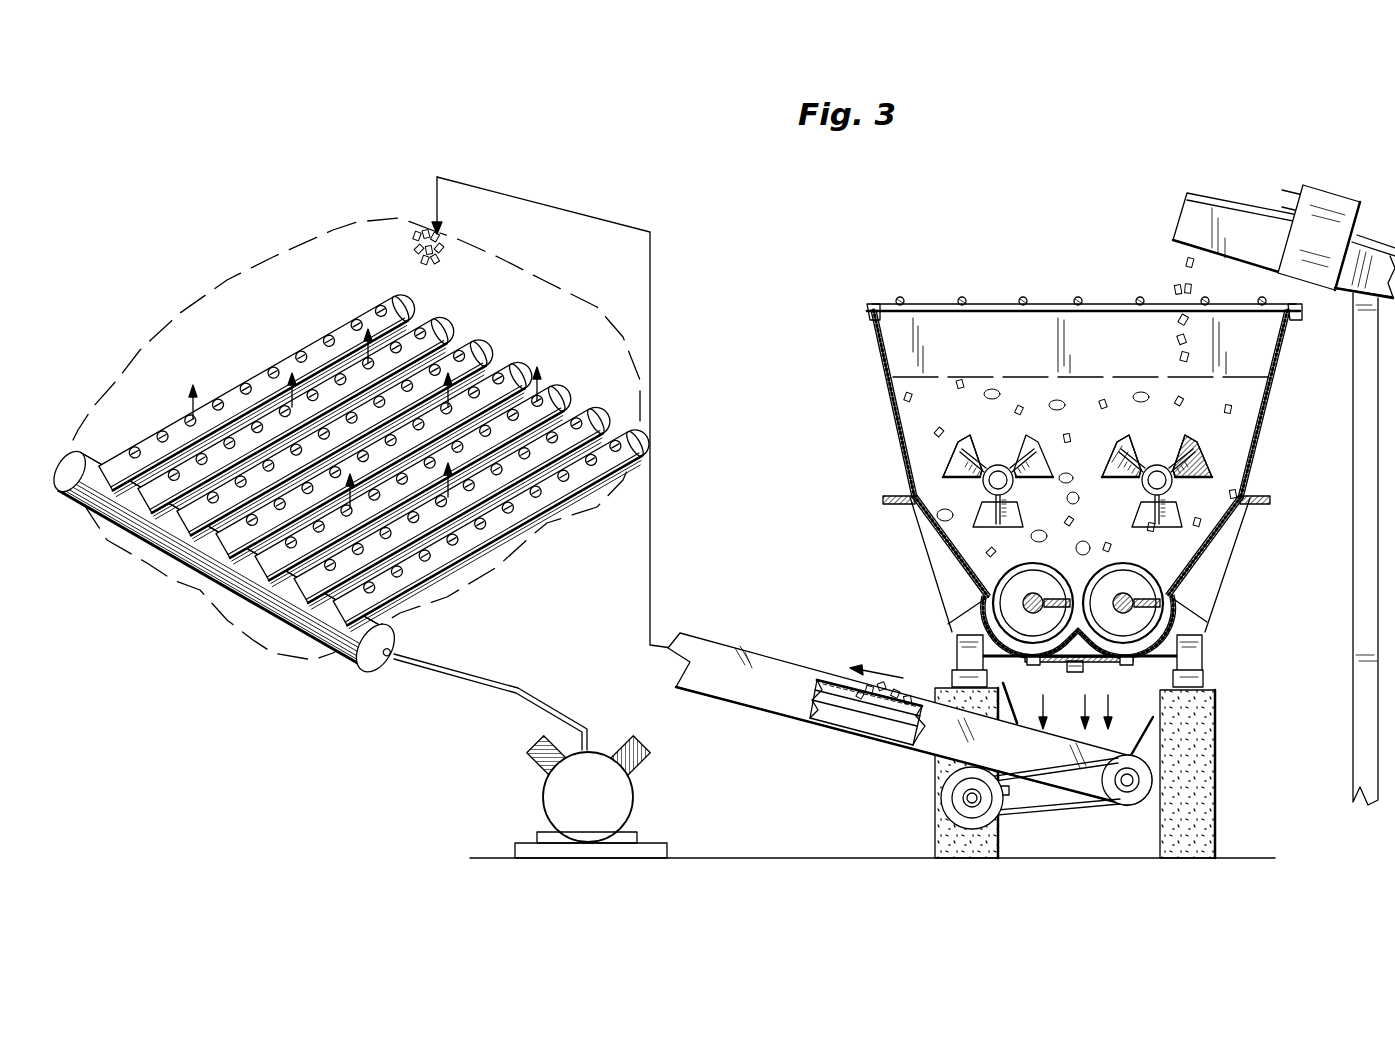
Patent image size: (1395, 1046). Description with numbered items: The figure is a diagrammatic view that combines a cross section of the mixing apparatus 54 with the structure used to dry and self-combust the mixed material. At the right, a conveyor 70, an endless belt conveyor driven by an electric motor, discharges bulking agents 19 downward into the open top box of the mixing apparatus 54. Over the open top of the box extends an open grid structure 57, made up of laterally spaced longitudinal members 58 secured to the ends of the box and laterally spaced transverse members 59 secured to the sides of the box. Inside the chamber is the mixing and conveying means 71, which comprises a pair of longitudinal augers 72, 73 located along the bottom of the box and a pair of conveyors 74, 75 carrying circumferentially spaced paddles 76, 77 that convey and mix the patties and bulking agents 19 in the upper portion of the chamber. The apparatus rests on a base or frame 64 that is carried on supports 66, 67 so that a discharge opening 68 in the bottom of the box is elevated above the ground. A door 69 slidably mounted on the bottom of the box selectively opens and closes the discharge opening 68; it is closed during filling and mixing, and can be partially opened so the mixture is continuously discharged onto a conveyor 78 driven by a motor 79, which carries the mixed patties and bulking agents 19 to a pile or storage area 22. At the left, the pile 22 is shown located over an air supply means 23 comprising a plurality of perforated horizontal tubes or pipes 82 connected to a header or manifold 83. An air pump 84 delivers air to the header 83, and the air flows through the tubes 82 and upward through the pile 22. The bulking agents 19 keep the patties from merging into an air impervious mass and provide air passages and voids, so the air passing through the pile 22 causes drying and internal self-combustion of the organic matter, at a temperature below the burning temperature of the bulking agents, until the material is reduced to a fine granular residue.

The bulking agents 19 is at (1190, 290).
The pile 22 is at (306, 250).
The air supply means 23 is at (498, 765).
The mixing apparatus 54 is at (828, 315).
The open grid structure 57 is at (905, 308).
The longitudinal members 58 is at (1077, 299).
The transverse members 59 is at (1107, 302).
The base or frame 64 is at (1200, 661).
The support 66 is at (945, 695).
The support 67 is at (1210, 716).
The discharge opening 68 is at (1088, 658).
The door 69 is at (1060, 665).
The conveyor 70 is at (1235, 213).
The mixing and conveying means 71 is at (1012, 372).
The auger 72 is at (1023, 582).
The auger 73 is at (1142, 588).
The conveyor 74 is at (1018, 440).
The conveyor 75 is at (1190, 444).
The paddles 76 is at (960, 450).
The paddles 77 is at (1134, 456).
The conveyor 78 is at (783, 690).
The motor 79 is at (940, 801).
The perforated horizontal tubes 82 is at (434, 331).
The header or manifold 83 is at (232, 574).
The air pump 84 is at (633, 797).